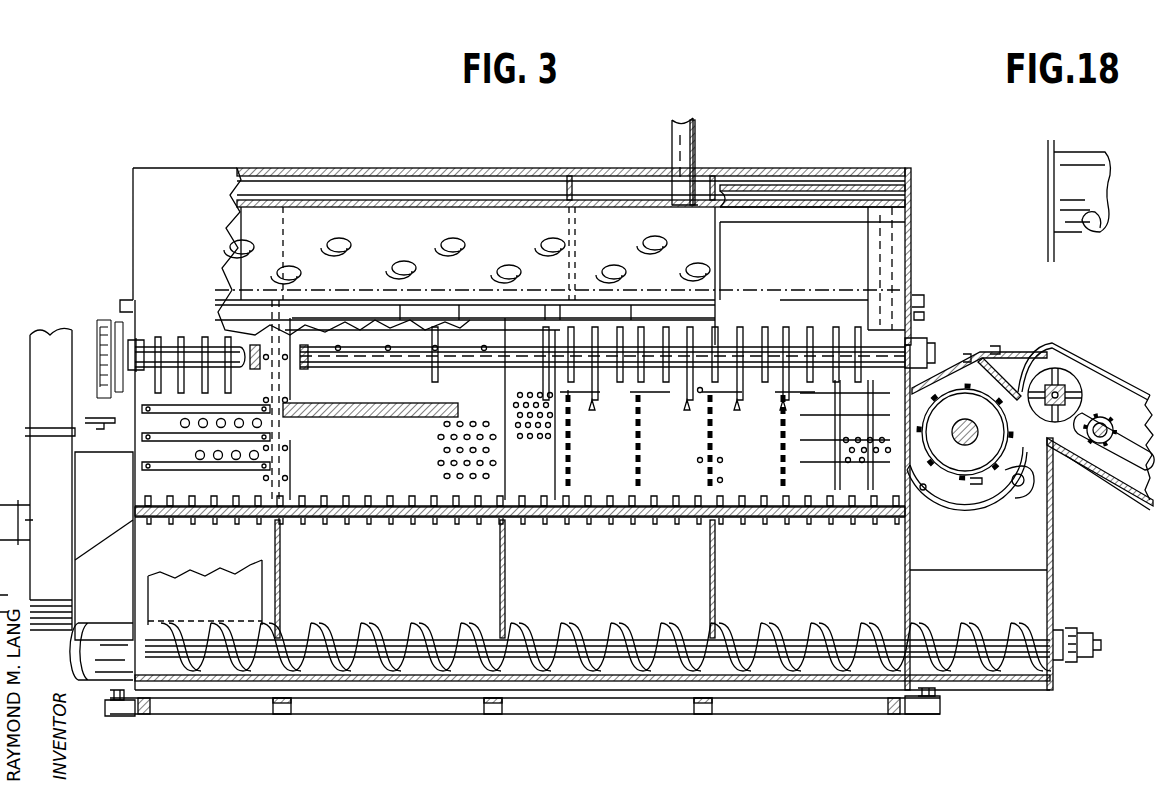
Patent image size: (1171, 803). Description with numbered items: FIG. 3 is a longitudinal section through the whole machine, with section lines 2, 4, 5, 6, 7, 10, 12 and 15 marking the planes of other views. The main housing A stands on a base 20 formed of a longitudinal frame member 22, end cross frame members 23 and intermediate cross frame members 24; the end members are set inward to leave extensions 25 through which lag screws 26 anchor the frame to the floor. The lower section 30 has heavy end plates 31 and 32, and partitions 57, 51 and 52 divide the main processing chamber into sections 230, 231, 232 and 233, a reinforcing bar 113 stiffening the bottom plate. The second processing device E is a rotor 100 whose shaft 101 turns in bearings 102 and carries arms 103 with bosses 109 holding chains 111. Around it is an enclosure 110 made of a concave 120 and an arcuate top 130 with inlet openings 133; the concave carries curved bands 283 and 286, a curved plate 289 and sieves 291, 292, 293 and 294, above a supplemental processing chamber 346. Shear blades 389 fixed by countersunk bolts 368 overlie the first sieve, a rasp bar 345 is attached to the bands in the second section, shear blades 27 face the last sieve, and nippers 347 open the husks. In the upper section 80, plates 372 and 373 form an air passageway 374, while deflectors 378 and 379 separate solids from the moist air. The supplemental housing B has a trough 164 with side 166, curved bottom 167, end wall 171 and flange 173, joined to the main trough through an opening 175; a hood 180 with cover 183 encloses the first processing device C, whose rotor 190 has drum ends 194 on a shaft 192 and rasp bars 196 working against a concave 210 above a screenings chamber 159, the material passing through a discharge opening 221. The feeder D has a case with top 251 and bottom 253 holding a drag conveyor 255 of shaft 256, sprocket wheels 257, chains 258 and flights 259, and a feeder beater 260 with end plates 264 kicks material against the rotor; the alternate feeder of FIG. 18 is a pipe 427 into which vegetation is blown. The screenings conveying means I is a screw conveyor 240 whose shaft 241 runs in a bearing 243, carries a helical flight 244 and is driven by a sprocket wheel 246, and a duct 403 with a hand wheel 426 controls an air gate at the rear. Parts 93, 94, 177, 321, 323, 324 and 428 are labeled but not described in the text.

In FIG. 3, the section line 2- 2 is at (87, 152).
In FIG. 3, the section line 4- 4 is at (965, 113).
In FIG. 3, the section line 5- 5 is at (715, 66).
In FIG. 3, the section line 6- 6 is at (210, 95).
In FIG. 3, the section line 7- 7 is at (823, 15).
In FIG. 3, the direction arrows 10 is at (824, 375).
In FIG. 3, the direction arrows 12 is at (688, 442).
In FIG. 3, the direction arrows 15 is at (404, 275).
In FIG. 3, the base bracket 20 is at (108, 700).
In FIG. 3, the base rail 22 is at (572, 714).
In FIG. 3, the base pad 23 is at (898, 714).
In FIG. 3, the base foot 24 is at (715, 708).
In FIG. 3, the base block 25 is at (912, 714).
In FIG. 3, the base fastener 26 is at (930, 714).
In FIG. 3, the bar 27 is at (768, 465).
In FIG. 3, the lower housing 30 is at (132, 572).
In FIG. 3, the housing wall 31 is at (150, 590).
In FIG. 3, the partition wall 32 is at (903, 535).
In FIG. 3, the partition 51 is at (507, 568).
In FIG. 3, the partition 52 is at (716, 566).
In FIG. 3, the partition 57 is at (281, 570).
In FIG. 3, the upper housing 80 is at (132, 243).
In FIG. 3, the bearing bracket 93 is at (45, 475).
In FIG. 3, the sprocket 94 is at (922, 315).
In FIG. 3, the finger shaft 100 is at (785, 357).
In FIG. 3, the drive shaft 101 is at (95, 366).
In FIG. 3, the shaft hub 102 is at (920, 340).
In FIG. 3, the hook member 103 is at (598, 465).
In FIG. 3, the chain 109 is at (645, 398).
In FIG. 3, the top rail 110 is at (450, 200).
In FIG. 3, the chain bar 111 is at (570, 440).
In FIG. 3, the chain 113 is at (620, 490).
In FIG. 3, the panel 120 is at (445, 488).
In FIG. 3, the rail 130 is at (545, 200).
In FIG. 3, the openings 133 is at (688, 262).
In FIG. 3, the shelf 159 is at (1010, 548).
In FIG. 3, the end wall 164 is at (1050, 595).
In FIG. 3, the compartment 166 is at (995, 605).
In FIG. 3, the floor 167 is at (1018, 681).
In FIG. 3, the end wall 171 is at (1054, 605).
In FIG. 3, the compartment 173 is at (1035, 538).
In FIG. 3, the opening 175 is at (905, 632).
In FIG. 3, the post 177 is at (678, 138).
In FIG. 3, the cover plate 180 is at (945, 380).
In FIG. 3, the brace 183 is at (1005, 355).
In FIG. 3, the shield 190 is at (1030, 497).
In FIG. 3, the stationary member 192 is at (948, 470).
In FIG. 3, the roller 194 is at (1000, 470).
In FIG. 3, the lug 196 is at (978, 480).
In FIG. 3, the cage shaft 210 is at (966, 440).
In FIG. 3, the perforated plate 221 is at (885, 445).
In FIG. 3, the box 230 is at (248, 580).
In FIG. 3, the compartment 231 is at (397, 575).
In FIG. 3, the compartment 232 is at (597, 565).
In FIG. 3, the compartment 233 is at (818, 562).
In FIG. 3, the auger 240 is at (735, 620).
In FIG. 3, the auger shaft 241 is at (780, 660).
In FIG. 3, the bearing 243 is at (1058, 668).
In FIG. 3, the auger flight 244 is at (430, 605).
In FIG. 3, the drive hub 246 is at (1083, 660).
In FIG. 3, the housing 251 is at (1065, 355).
In FIG. 3, the plate 253 is at (1130, 470).
In FIG. 3, the rod 255 is at (1130, 420).
In FIG. 3, the roller 256 is at (1100, 445).
In FIG. 3, the rod 257 is at (1112, 420).
In FIG. 3, the plate 258 is at (1130, 485).
In FIG. 3, the plate 259 is at (1055, 448).
In FIG. 3, the wheel 260 is at (1055, 365).
In FIG. 3, the spokes 264 is at (1062, 395).
In FIG. 3, the perforated panel 283 is at (760, 440).
In FIG. 3, the housing 286 is at (145, 463).
In FIG. 3, the conveyor 289 is at (890, 512).
In FIG. 3, the conveyor section 291 is at (218, 505).
In FIG. 3, the conveyor section 292 is at (360, 498).
In FIG. 3, the conveyor section 293 is at (545, 484).
In FIG. 3, the conveyor section 294 is at (782, 495).
In FIG. 3, the bottom 321 is at (205, 622).
In FIG. 3, the wall 323 is at (262, 565).
In FIG. 3, the wall 324 is at (162, 640).
In FIG. 3, the bar 345 is at (352, 410).
In FIG. 3, the trough 346 is at (625, 605).
In FIG. 3, the brace 347 is at (562, 310).
In FIG. 3, the bar 368 is at (272, 466).
In FIG. 3, the rail 372 is at (805, 182).
In FIG. 3, the rail 373 is at (770, 190).
In FIG. 3, the rail 374 is at (868, 195).
In FIG. 3, the panel 378 is at (795, 212).
In FIG. 3, the panel 379 is at (882, 238).
In FIG. 3, the plate 389 is at (208, 450).
In FIG. 3, the brace 403 is at (90, 545).
In FIG. 3, the fitting 426 is at (105, 405).
In FIG. 18, the guide 427 is at (1075, 218).
In FIG. 18, the plate 428 is at (1056, 150).
In FIG. 3, the arrow A is at (913, 228).
In FIG. 3, the arrow B is at (1057, 560).
In FIG. 3, the cage C is at (982, 403).
In FIG. 3, the arrow D is at (1140, 500).
In FIG. 3, the arrow E is at (848, 320).
In FIG. 3, the arrow I is at (440, 612).